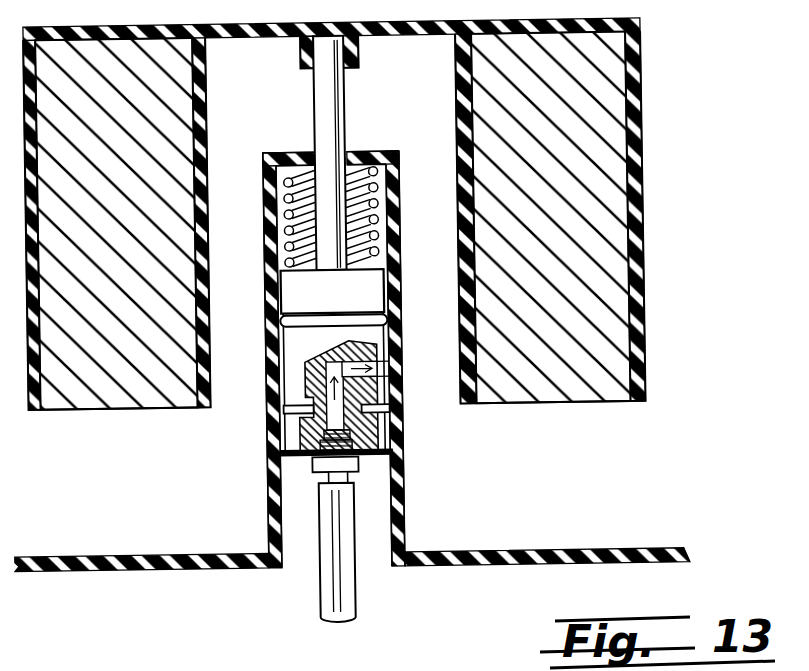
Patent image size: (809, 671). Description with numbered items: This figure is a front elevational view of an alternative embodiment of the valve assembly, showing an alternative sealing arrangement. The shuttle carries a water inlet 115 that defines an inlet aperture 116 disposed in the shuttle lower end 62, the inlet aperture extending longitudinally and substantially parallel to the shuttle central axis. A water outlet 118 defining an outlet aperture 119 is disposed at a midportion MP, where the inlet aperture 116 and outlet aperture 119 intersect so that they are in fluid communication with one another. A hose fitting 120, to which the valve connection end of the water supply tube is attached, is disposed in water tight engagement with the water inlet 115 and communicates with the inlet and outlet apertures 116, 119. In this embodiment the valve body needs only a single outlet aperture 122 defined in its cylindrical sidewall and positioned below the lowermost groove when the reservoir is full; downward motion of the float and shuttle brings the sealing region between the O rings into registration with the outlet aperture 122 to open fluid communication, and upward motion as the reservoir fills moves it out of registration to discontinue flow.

The outlet aperture 122 is at (401, 442).
The water outlet 118 is at (381, 368).
The outlet aperture 119 is at (388, 372).
The midportion MP is at (386, 377).
The inlet aperture 116 is at (290, 428).
The water inlet 115 is at (290, 443).
The hose fitting 120 is at (318, 458).
The shuttle lower end 62 is at (394, 470).